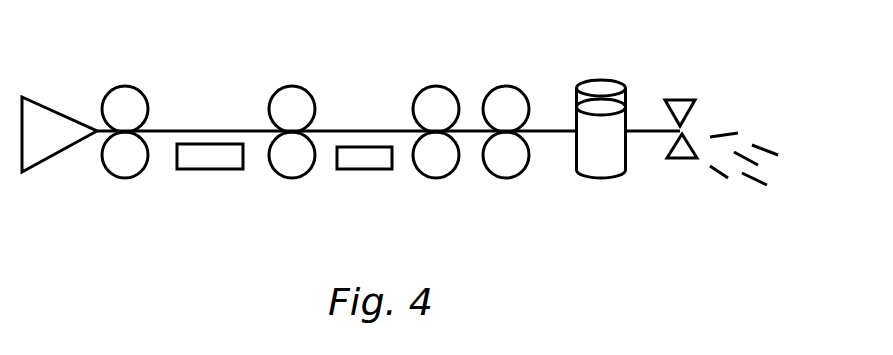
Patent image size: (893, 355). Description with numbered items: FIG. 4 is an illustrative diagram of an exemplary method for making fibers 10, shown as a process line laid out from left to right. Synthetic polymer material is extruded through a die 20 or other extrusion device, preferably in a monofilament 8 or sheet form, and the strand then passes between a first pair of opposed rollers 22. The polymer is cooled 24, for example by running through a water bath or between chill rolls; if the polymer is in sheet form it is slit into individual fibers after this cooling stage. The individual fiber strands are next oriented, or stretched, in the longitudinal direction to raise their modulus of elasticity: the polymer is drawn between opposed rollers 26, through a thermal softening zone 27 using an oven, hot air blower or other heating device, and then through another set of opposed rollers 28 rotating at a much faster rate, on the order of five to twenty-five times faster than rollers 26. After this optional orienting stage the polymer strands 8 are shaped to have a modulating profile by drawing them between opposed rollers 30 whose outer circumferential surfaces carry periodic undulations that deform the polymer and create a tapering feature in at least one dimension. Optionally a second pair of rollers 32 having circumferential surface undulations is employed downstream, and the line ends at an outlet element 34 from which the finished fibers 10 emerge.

The monofilament 8 is at (164, 121).
The fibers 10 is at (764, 110).
The die 20 is at (39, 80).
The nip rollers 22 is at (125, 83).
The cooling stage 24 is at (213, 183).
The opposed rollers 26 is at (292, 80).
The thermal softening zone 27 is at (366, 183).
The nip rollers 28 is at (430, 82).
The opposed rollers 30 is at (505, 82).
The second pair of rollers 32 is at (602, 190).
The valve / nozzle 34 is at (680, 82).